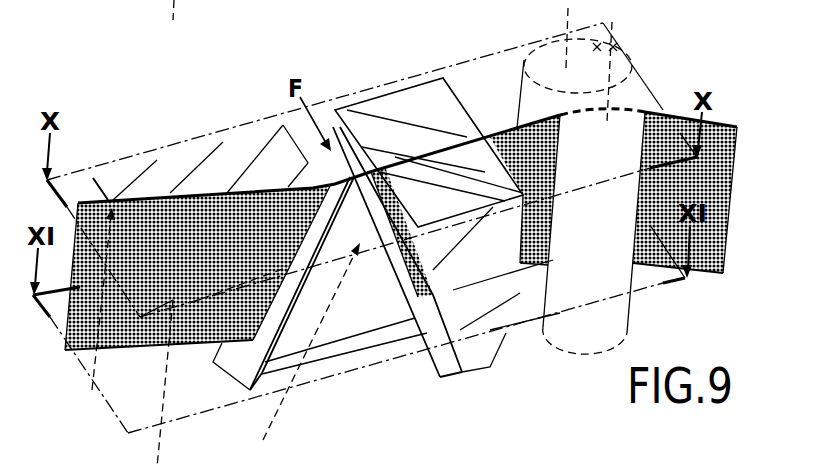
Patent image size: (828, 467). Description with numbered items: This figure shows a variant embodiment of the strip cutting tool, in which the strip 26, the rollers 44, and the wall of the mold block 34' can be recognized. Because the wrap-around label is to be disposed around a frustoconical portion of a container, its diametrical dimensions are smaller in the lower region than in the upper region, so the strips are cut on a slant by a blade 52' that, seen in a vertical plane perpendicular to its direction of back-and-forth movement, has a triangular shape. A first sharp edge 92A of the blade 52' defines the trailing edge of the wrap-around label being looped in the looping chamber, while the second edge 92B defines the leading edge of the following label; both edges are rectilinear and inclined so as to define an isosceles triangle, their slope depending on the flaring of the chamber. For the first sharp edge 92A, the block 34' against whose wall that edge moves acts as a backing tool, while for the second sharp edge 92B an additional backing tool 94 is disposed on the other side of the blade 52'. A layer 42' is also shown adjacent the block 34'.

The strip 26 is at (722, 174).
The mold block 34' is at (210, 150).
The bond layer 42' is at (102, 165).
The rollers 44 is at (623, 95).
The blade 52' is at (344, 365).
The first sharp edge 92A is at (279, 357).
The second sharp edge 92B is at (427, 328).
The additional backing tool 94 is at (398, 103).